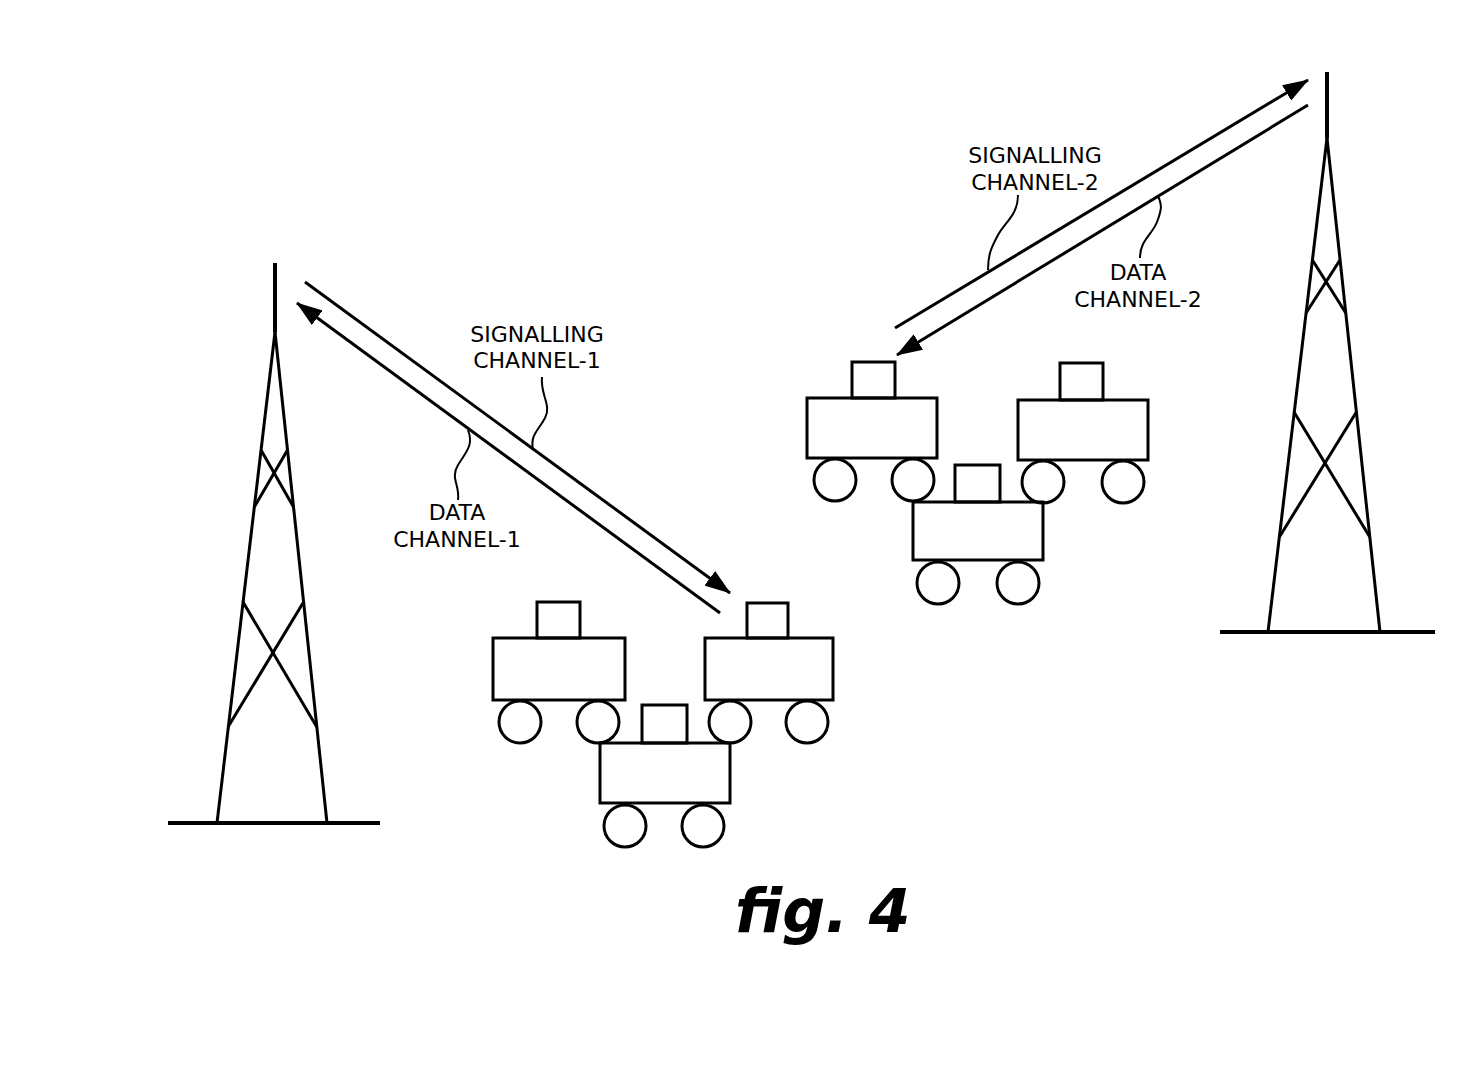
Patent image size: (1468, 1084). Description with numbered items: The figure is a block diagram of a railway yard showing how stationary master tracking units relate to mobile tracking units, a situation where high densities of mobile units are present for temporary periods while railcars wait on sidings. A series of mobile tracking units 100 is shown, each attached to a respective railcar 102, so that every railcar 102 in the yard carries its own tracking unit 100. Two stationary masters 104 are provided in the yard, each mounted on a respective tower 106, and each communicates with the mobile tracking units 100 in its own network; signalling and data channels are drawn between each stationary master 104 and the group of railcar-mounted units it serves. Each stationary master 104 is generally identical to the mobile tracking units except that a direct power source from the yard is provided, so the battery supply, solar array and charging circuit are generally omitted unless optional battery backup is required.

The tracking unit 100 is at (808, 526).
The railcar 102 is at (796, 622).
The stationary master 104 is at (803, 196).
The tower 106 is at (801, 514).